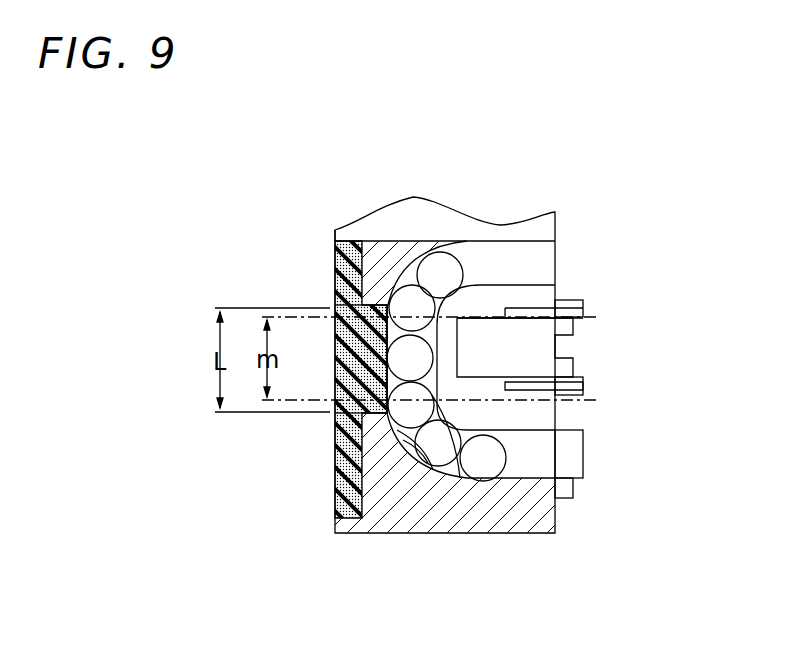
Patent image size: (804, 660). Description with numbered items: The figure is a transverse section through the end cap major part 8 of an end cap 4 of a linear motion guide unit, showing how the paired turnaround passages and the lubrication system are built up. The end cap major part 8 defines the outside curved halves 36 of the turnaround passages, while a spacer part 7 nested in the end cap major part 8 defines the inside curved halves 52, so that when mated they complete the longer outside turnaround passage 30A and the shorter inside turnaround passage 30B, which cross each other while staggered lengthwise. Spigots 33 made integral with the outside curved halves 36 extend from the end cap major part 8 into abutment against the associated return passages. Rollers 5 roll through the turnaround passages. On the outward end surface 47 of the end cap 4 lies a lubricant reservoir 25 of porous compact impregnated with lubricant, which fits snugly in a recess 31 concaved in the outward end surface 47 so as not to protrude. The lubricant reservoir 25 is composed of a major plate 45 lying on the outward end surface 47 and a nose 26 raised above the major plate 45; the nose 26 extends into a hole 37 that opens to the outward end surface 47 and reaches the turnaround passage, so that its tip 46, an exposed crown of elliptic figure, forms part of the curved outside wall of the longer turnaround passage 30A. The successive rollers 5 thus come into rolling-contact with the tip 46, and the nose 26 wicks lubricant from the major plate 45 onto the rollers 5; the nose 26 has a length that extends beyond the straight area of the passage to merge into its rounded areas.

The end cap 4 is at (385, 225).
The rollers 5 is at (455, 262).
The spacer part 7 is at (490, 388).
The end cap major part 8 is at (400, 507).
The lubricant reservoir 25 is at (335, 278).
The nose 26 is at (337, 428).
The longer turnaround passage 30A is at (540, 262).
The shorter turnaround passage 30B is at (515, 367).
The recess 31 is at (335, 470).
The spigots 33 is at (575, 308).
The outside curved half 36 is at (427, 468).
The hole 37 is at (335, 332).
The major plate 45 is at (335, 488).
The tip 46 is at (335, 357).
The outward end surface 47 is at (335, 253).
The inside curved half 52 is at (455, 475).